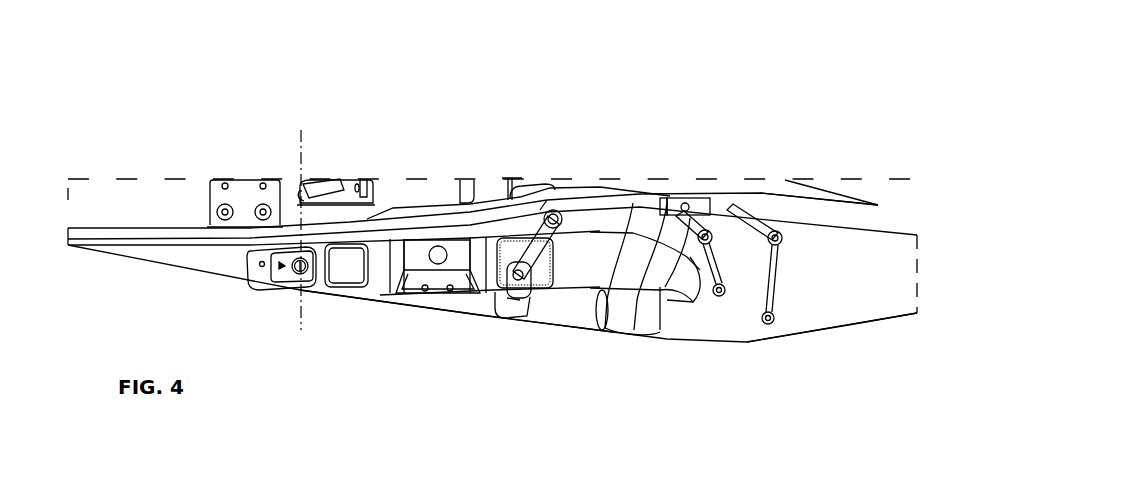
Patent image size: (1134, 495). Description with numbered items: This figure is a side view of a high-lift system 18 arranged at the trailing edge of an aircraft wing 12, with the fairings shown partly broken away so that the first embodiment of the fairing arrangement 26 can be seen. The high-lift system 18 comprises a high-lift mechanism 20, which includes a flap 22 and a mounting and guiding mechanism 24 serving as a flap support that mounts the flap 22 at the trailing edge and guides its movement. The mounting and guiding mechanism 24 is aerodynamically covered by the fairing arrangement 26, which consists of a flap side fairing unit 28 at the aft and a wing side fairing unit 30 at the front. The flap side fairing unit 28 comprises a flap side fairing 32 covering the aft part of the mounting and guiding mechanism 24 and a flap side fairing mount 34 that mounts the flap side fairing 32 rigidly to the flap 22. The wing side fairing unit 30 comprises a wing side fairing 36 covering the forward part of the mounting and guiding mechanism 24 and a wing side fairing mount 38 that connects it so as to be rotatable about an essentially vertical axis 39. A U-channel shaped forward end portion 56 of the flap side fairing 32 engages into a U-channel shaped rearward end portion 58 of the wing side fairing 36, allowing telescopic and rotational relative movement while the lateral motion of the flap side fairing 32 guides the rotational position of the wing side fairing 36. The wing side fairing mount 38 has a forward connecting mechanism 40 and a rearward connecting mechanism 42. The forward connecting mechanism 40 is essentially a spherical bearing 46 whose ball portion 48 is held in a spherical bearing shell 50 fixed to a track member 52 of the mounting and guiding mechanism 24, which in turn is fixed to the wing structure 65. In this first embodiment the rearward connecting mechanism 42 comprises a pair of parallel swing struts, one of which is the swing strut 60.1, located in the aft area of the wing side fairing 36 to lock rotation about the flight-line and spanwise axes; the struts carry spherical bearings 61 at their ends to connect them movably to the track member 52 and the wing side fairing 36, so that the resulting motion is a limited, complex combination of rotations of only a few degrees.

The aircraft wing 12 is at (128, 175).
The high-lift system 18 is at (870, 428).
The high-lift mechanism 20 is at (667, 133).
The flap 22 is at (808, 182).
The mounting and guiding mechanism 24 is at (457, 247).
The fairing arrangement 26 is at (350, 345).
The flap side fairing unit 28 is at (877, 348).
The wing side fairing unit 30 is at (413, 345).
The flap side fairing 32 is at (806, 335).
The flap side fairing mount 34 is at (750, 203).
The wing side fairing 36 is at (540, 325).
The wing side fairing mount 38 is at (510, 335).
The essentially vertical axis 39 is at (300, 327).
The forward connecting mechanism 40 is at (273, 270).
The rearward connecting mechanism 42 is at (560, 263).
The spherical bearing 46 is at (300, 290).
The ball portion 48 is at (266, 188).
The spherical bearing shell 50 is at (240, 205).
The track member 52 is at (413, 248).
The U-channel shaped forward end portion 56 is at (662, 318).
The U-channel shaped rearward end portion 58 is at (622, 215).
The swing strut 60.1 is at (540, 190).
The spherical bearing of swing strut 61 is at (560, 208).
The wing structure 65 is at (293, 190).